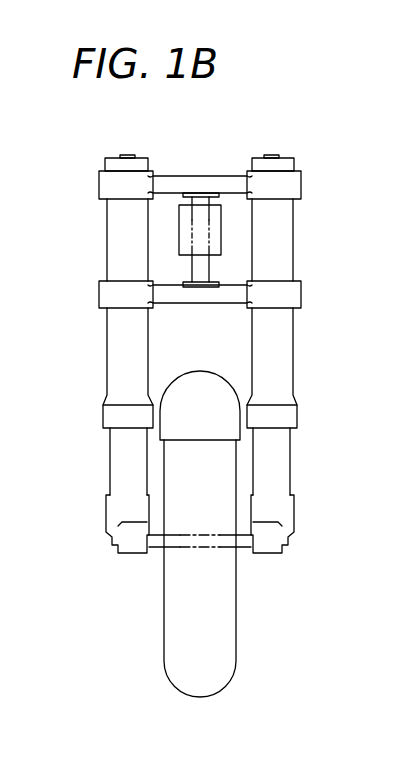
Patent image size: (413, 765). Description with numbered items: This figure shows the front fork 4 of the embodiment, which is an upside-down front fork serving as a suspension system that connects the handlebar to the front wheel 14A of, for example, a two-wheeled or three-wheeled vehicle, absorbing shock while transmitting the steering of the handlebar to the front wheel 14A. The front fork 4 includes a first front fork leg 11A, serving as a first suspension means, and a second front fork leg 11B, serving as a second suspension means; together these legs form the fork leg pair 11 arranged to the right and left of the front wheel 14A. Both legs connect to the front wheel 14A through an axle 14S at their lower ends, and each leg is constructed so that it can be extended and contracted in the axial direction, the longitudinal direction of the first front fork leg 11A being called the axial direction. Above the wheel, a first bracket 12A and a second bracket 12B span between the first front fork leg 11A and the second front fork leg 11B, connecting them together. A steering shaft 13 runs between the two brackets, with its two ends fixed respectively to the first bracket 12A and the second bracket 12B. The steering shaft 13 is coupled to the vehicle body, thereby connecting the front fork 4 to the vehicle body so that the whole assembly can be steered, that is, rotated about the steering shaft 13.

The front fork 4 is at (67, 152).
The fork legs 11 is at (95, 332).
The first front fork leg 11A is at (107, 375).
The second front fork leg 11B is at (293, 375).
The first bracket 12A is at (300, 183).
The second bracket 12B is at (300, 295).
The steering shaft 13 is at (209, 264).
The axle 14S is at (157, 548).
The front wheel 14A is at (237, 630).